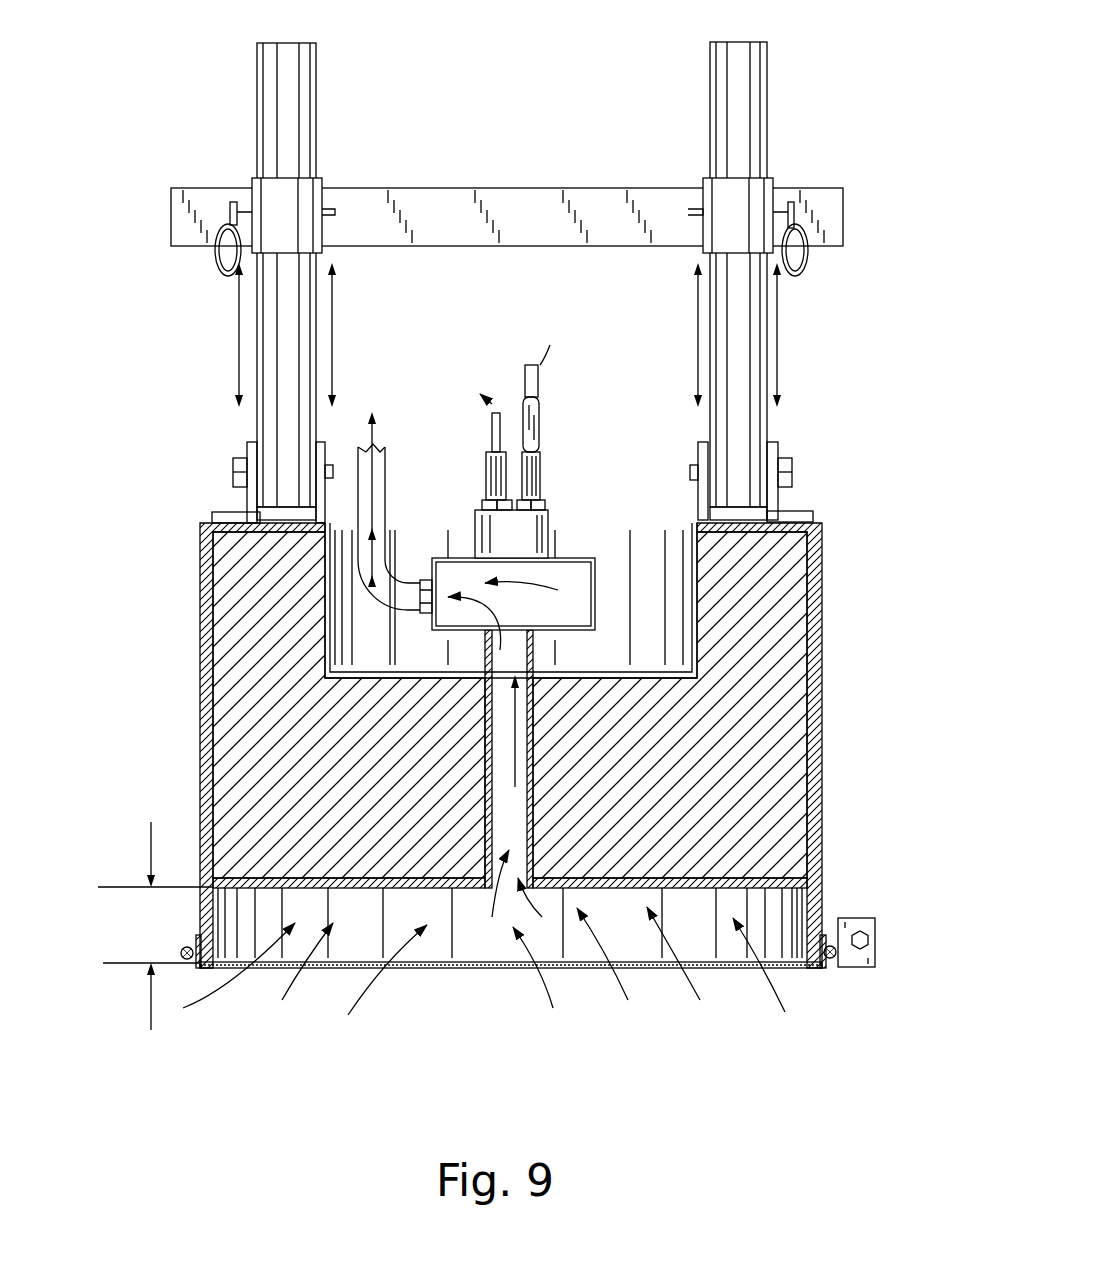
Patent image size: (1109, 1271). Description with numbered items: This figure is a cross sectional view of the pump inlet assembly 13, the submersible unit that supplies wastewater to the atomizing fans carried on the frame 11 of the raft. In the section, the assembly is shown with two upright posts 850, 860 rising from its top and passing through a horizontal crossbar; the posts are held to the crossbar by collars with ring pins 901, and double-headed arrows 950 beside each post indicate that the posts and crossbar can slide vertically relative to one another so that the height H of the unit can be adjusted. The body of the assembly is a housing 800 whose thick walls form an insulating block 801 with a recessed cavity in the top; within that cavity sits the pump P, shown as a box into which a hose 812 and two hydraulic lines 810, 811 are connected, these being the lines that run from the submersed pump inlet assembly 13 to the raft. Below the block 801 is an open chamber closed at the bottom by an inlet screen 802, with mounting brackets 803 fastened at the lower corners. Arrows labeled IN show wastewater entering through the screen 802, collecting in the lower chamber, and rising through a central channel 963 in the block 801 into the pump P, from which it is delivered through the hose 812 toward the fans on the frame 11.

The frame 11 is at (452, 233).
The pump inlet assembly 13 is at (128, 500).
The first support post 850 is at (290, 80).
The second support post 860 is at (718, 62).
The locking ring pin 901 is at (232, 203).
The vertical movement direction 950 is at (236, 345).
The height H is at (257, 150).
The housing 800 is at (822, 565).
The insulating block 801 is at (757, 717).
The bottom inlet screen 802 is at (637, 967).
The mounting bracket 803 is at (860, 925).
The air channel 963 is at (487, 752).
The hydraulic line 810 is at (532, 374).
The hydraulic line 811 is at (492, 416).
The hose 812 is at (375, 493).
The pump box P is at (583, 558).
The air inlet flow IN is at (484, 976).